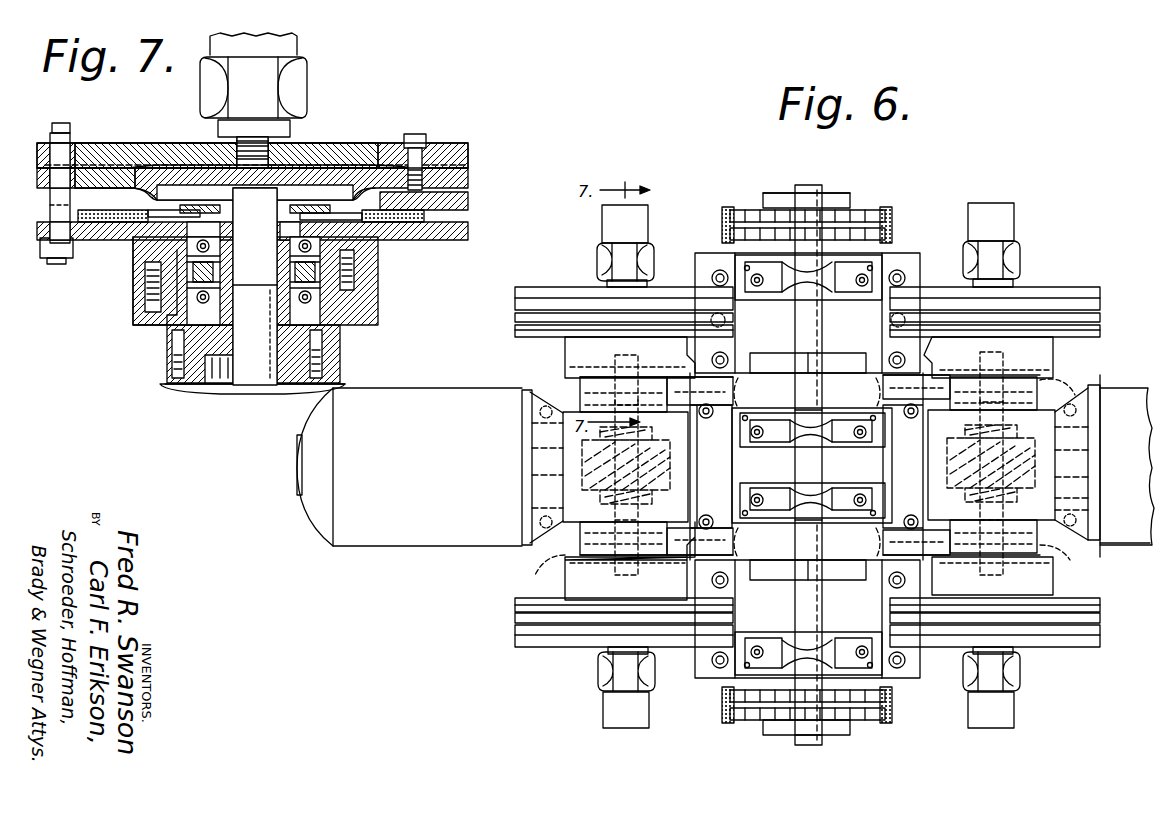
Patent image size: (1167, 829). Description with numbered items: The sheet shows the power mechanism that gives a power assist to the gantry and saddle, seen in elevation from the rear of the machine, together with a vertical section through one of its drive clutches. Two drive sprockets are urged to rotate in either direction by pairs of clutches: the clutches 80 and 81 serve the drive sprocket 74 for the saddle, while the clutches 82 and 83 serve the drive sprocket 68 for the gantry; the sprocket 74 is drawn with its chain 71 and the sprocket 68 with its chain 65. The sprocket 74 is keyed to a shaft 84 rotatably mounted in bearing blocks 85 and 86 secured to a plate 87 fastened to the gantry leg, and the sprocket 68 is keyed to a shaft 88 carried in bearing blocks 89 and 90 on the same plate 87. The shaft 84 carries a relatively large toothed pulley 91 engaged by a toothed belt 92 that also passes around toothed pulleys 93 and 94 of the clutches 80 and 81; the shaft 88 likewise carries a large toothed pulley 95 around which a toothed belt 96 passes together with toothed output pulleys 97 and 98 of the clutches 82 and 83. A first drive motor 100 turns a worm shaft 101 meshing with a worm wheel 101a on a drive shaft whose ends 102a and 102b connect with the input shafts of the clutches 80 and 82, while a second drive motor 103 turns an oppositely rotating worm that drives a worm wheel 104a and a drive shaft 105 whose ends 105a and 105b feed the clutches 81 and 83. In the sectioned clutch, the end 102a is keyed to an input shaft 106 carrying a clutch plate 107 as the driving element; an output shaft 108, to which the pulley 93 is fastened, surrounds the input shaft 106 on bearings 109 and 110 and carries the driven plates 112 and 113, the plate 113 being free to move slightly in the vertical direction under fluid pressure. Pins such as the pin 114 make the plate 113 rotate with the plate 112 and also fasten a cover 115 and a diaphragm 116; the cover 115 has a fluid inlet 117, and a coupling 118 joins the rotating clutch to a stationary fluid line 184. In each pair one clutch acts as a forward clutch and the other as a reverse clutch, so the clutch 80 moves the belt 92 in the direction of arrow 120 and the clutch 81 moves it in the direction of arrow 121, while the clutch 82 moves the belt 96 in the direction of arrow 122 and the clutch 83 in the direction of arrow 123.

In FIG. 6, the lower sprocket chain 65 is at (722, 708).
In FIG. 6, the drive sprocket 68 is at (860, 718).
In FIG. 6, the upper sprocket chain 71 is at (722, 225).
In FIG. 6, the drive sprocket 74 is at (870, 212).
In FIG. 7, the clutch 80 is at (462, 143).
In FIG. 6, the clutch 80 is at (550, 287).
In FIG. 6, the clutch 81 is at (1080, 287).
In FIG. 6, the clutch 82 is at (555, 647).
In FIG. 6, the clutch 83 is at (1080, 647).
In FIG. 6, the shaft 84 is at (812, 322).
In FIG. 6, the bearing block 85 is at (745, 290).
In FIG. 6, the bearing block 86 is at (770, 440).
In FIG. 6, the plate 87 is at (912, 262).
In FIG. 6, the shaft 88 is at (812, 608).
In FIG. 6, the bearing block 89 is at (860, 490).
In FIG. 6, the bearing block 90 is at (745, 630).
In FIG. 6, the toothed pulley 91 is at (750, 358).
In FIG. 6, the toothed belt 92 is at (876, 348).
In FIG. 7, the toothed pulley 93 is at (340, 353).
In FIG. 6, the toothed pulley 93 is at (590, 355).
In FIG. 6, the toothed pulley 94 is at (1065, 380).
In FIG. 6, the toothed pulley 95 is at (752, 578).
In FIG. 6, the toothed belt 96 is at (875, 584).
In FIG. 6, the toothed output pulley 97 is at (545, 565).
In FIG. 6, the toothed output pulley 98 is at (1070, 560).
In FIG. 6, the first drive motor 100 is at (400, 548).
In FIG. 6, the worm shaft 101 is at (575, 470).
In FIG. 6, the worm wheel 101a is at (540, 500).
In FIG. 7, the drive shaft end 102a is at (258, 375).
In FIG. 6, the drive shaft end 102a is at (630, 365).
In FIG. 6, the drive shaft end 102b is at (630, 572).
In FIG. 6, the second drive motor 103 is at (1130, 531).
In FIG. 6, the worm wheel 104a is at (1085, 508).
In FIG. 6, the drive shaft 105 is at (1100, 413).
In FIG. 6, the drive shaft end 105a is at (1005, 365).
In FIG. 6, the drive shaft end 105b is at (990, 572).
In FIG. 7, the input shaft 106 is at (218, 380).
In FIG. 7, the clutch plate 107 is at (335, 210).
In FIG. 7, the output shaft 108 is at (378, 288).
In FIG. 7, the bearing 109 is at (167, 325).
In FIG. 7, the bearing 110 is at (180, 250).
In FIG. 7, the plate 112 is at (445, 232).
In FIG. 7, the plate 113 is at (455, 197).
In FIG. 7, the pin 114 is at (65, 125).
In FIG. 7, the cover 115 is at (140, 150).
In FIG. 7, the diaphragm 116 is at (300, 165).
In FIG. 7, the fluid inlet 117 is at (275, 147).
In FIG. 7, the coupling 118 is at (292, 75).
In FIG. 7, the stationary fluid line 184 is at (283, 42).
In FIG. 6, the arrow 120 is at (745, 392).
In FIG. 6, the arrow 121 is at (878, 392).
In FIG. 6, the arrow 122 is at (745, 543).
In FIG. 6, the arrow 123 is at (878, 543).